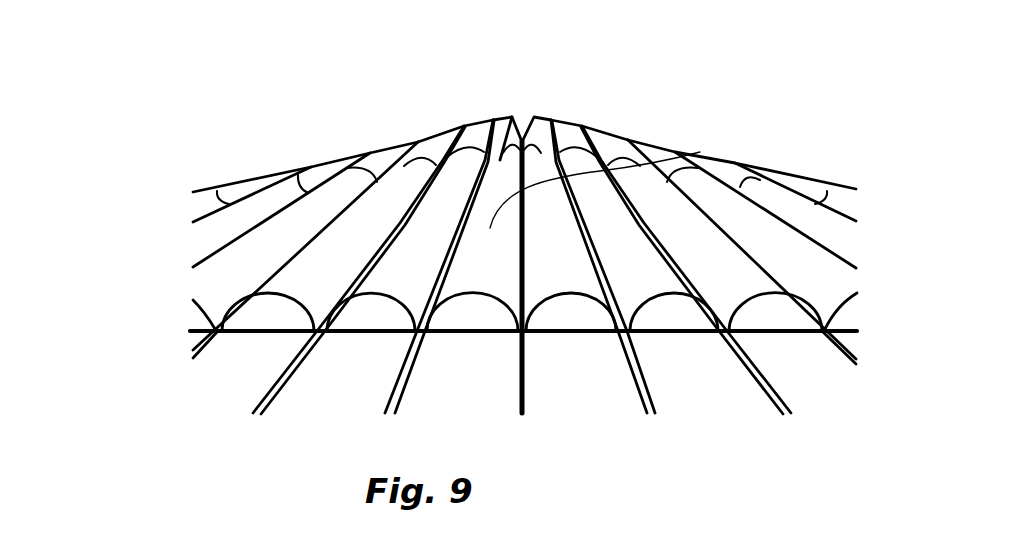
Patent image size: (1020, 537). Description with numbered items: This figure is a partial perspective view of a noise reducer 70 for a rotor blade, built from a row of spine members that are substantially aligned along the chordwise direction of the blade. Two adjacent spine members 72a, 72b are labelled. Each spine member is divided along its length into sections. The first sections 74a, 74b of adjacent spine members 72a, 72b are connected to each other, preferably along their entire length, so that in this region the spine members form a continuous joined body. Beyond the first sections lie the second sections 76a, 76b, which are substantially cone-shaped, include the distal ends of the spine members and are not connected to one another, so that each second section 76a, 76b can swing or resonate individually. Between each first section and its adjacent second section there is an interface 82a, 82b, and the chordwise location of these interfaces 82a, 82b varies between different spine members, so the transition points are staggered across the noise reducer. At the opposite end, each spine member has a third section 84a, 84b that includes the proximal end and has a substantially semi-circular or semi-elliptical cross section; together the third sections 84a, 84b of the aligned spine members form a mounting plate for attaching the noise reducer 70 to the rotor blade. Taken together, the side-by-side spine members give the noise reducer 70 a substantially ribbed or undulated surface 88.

The noise reducer 70 is at (318, 98).
The spine member 72a is at (410, 258).
The spine member 72b is at (693, 154).
The first section 74a is at (415, 148).
The first section 74b is at (560, 121).
The second section 76a is at (478, 127).
The second section 76b is at (500, 212).
The interface 82a is at (433, 215).
The interface 82b is at (536, 122).
The third section 84a is at (347, 386).
The third section 84b is at (482, 368).
The ribbed or undulated surface 88 is at (562, 245).